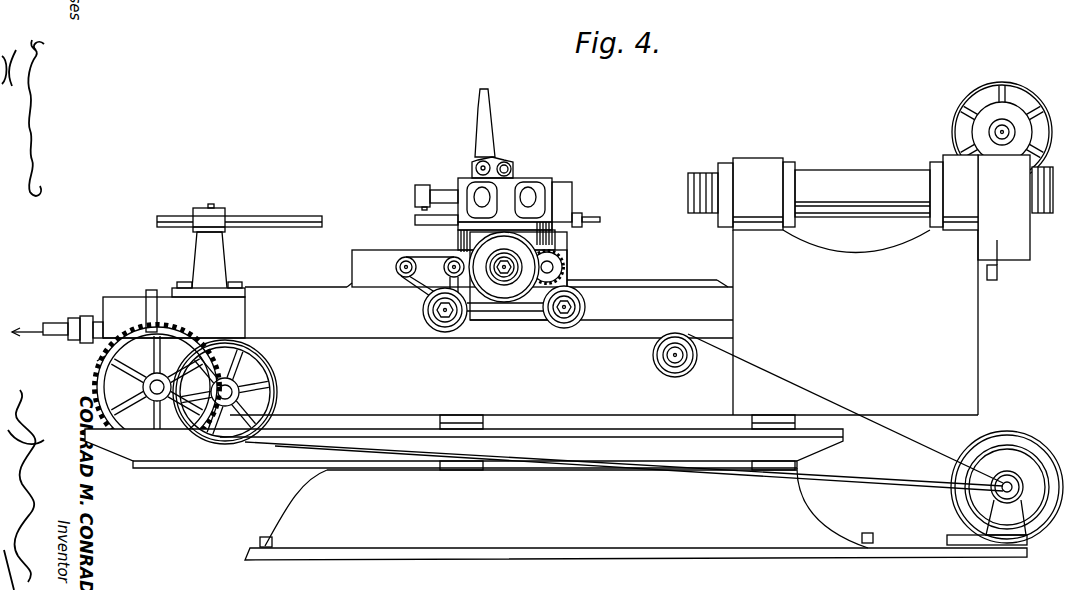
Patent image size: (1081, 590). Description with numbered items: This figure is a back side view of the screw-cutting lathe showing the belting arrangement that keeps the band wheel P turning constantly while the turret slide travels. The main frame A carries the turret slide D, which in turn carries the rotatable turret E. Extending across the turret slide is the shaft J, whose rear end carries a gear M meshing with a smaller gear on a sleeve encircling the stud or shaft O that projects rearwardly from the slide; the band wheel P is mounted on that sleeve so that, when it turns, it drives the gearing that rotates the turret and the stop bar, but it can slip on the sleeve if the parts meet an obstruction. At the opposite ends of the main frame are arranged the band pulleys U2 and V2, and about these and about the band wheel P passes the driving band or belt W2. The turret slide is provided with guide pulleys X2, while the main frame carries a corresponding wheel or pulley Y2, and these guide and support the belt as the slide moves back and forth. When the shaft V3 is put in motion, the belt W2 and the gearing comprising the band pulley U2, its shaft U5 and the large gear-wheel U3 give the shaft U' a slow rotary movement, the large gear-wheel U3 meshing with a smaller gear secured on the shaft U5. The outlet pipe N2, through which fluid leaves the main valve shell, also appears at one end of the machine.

The main frame A is at (446, 403).
The turret slide D is at (442, 268).
The turret E is at (545, 182).
The shaft J is at (557, 254).
The gear M is at (558, 265).
The stud or shaft O is at (497, 280).
The band wheel P is at (509, 292).
The guide pulleys X2 is at (595, 307).
The wheel or pulley Y2 is at (659, 355).
The outlet pipe N2 is at (57, 320).
The shaft U' is at (157, 387).
The band pulley U2 is at (278, 394).
The large gear-wheel U3 is at (86, 363).
The shaft U5 is at (224, 400).
The driving band or belt W2 is at (845, 408).
The band pulley V2 is at (990, 484).
The shaft V3 is at (1008, 480).